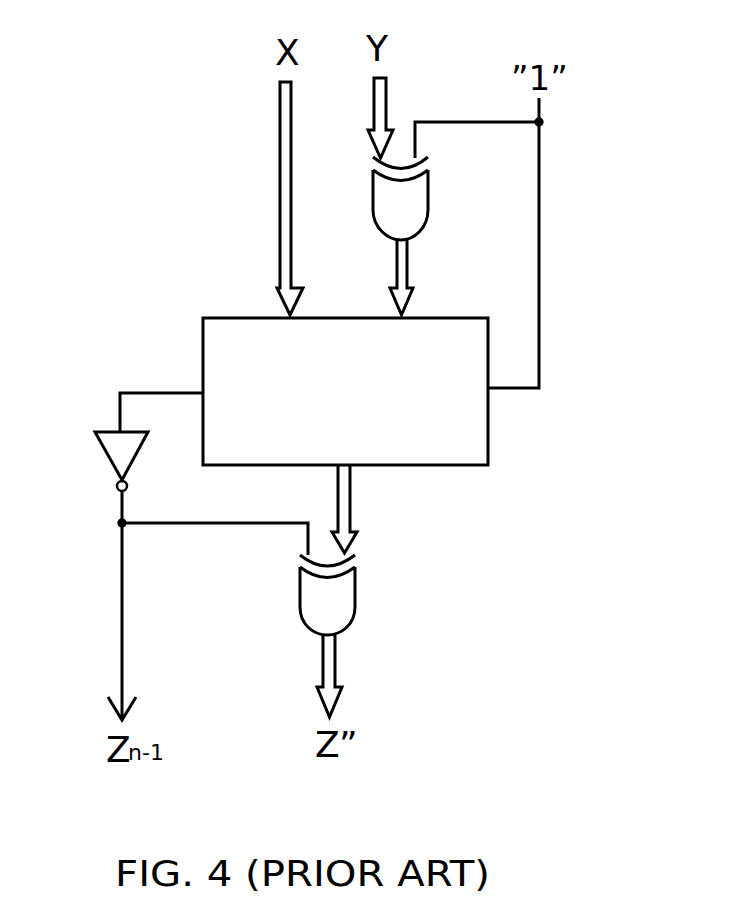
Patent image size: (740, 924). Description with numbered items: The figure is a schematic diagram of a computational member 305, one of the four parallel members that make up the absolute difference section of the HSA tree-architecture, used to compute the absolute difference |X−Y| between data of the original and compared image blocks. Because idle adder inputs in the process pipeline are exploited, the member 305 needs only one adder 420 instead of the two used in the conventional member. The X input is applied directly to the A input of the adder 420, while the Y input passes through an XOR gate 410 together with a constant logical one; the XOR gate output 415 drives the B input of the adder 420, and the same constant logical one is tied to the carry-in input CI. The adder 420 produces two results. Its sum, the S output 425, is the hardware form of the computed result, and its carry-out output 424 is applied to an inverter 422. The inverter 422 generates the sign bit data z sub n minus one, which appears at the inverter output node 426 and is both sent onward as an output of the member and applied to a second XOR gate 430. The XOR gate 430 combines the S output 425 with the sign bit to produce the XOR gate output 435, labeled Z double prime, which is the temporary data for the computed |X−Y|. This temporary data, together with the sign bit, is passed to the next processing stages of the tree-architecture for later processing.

The computational member 305 is at (576, 190).
The XOR gate 410 is at (428, 197).
The XOR gate output 415 is at (407, 268).
The adder 420 is at (488, 425).
The inverter 422 is at (103, 455).
The carry-out output 424 is at (168, 392).
The S output 425 is at (352, 500).
The inverter output node 426 is at (122, 542).
The XOR gate 430 is at (355, 587).
The XOR gate output 435 is at (328, 672).